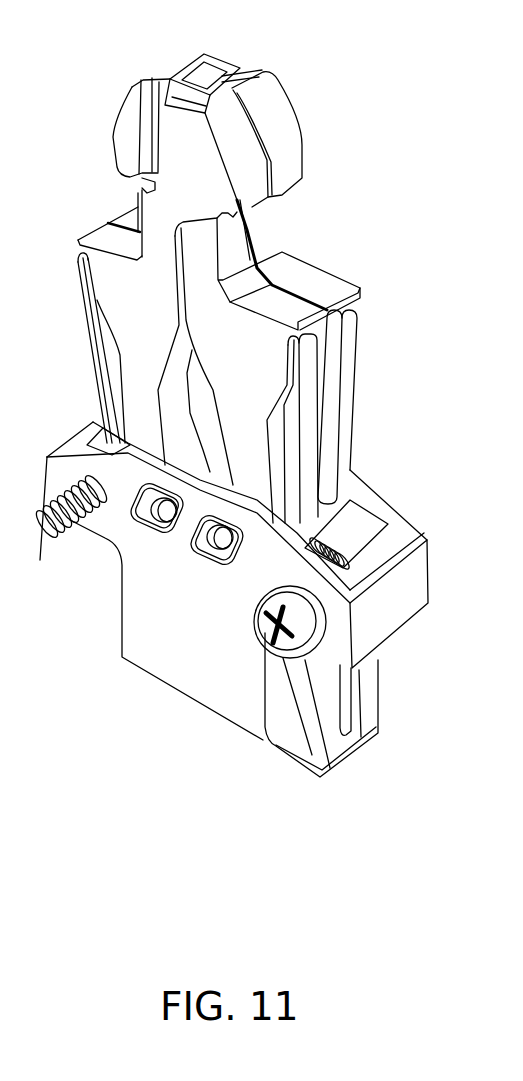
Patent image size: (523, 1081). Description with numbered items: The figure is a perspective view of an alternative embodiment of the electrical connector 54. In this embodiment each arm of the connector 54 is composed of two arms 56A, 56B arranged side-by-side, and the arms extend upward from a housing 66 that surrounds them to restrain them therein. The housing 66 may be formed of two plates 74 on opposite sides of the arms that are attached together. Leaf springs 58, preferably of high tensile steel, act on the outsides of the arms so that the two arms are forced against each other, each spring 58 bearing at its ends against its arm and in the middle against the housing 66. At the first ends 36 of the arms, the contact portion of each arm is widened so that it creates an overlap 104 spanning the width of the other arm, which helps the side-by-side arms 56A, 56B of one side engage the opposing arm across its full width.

The first end 36 is at (305, 116).
The electrical connector 54 is at (338, 185).
The arm 56A is at (108, 293).
The arm 56B is at (125, 210).
The leaf spring 58 is at (95, 358).
The housing 66 is at (406, 608).
The plate 74 is at (165, 658).
The overlap 104 is at (187, 58).